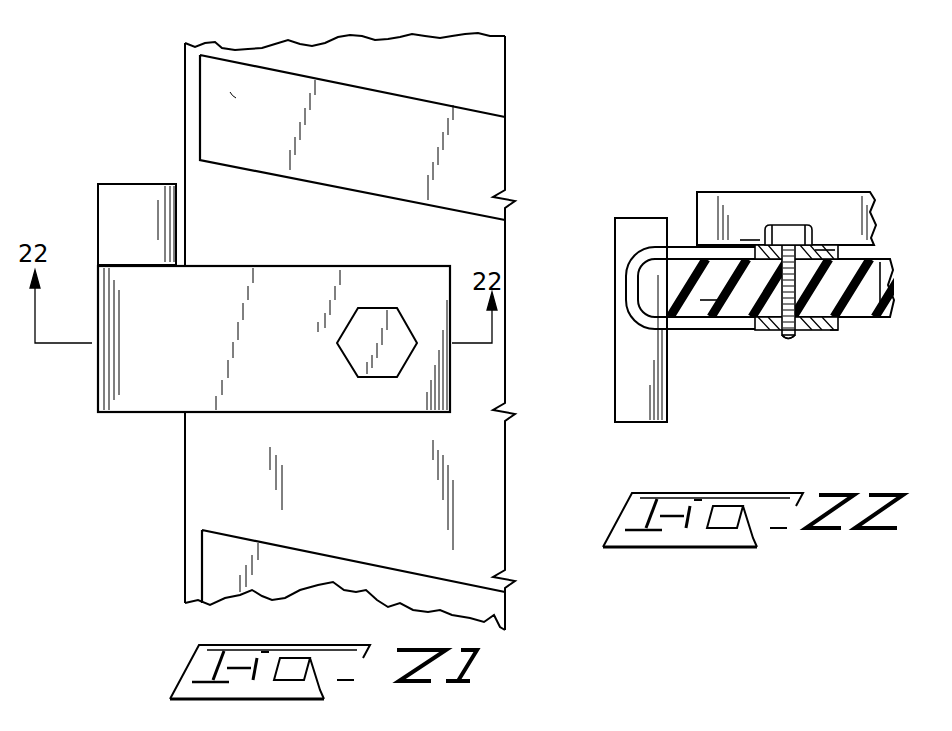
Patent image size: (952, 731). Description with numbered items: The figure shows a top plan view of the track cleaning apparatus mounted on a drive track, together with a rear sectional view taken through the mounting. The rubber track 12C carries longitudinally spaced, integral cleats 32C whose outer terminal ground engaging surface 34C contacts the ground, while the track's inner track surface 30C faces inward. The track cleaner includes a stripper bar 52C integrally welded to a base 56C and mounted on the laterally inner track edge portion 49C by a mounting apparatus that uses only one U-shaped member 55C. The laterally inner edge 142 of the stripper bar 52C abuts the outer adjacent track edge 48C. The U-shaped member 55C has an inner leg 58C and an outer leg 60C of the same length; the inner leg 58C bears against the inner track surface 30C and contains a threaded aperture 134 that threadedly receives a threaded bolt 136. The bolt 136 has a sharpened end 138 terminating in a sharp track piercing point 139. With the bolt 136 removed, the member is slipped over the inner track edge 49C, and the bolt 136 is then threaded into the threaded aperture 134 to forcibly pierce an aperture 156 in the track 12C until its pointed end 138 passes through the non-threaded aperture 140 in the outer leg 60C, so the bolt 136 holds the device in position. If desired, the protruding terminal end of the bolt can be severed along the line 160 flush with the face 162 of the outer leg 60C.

In FIG. 21, the track 12C is at (448, 52).
In FIG. 22, the track 12C is at (888, 273).
In FIG. 22, the inner track surface 30C is at (857, 257).
In FIG. 21, the cleats 32C is at (472, 105).
In FIG. 22, the cleats 32C is at (745, 238).
In FIG. 21, the ground engaging surface 34C is at (236, 92).
In FIG. 22, the ground engaging surface 34C is at (823, 250).
In FIG. 22, the outer adjacent track edge 48C is at (695, 292).
In FIG. 22, the laterally inner track edge portion 49C is at (660, 298).
In FIG. 21, the stripper bar 52C is at (120, 200).
In FIG. 22, the U-shaped member 55C is at (771, 401).
In FIG. 22, the base 56C is at (642, 283).
In FIG. 21, the inner leg 58C is at (222, 283).
In FIG. 22, the inner leg 58C is at (818, 238).
In FIG. 22, the outer leg 60C is at (840, 330).
In FIG. 22, the threaded aperture 134 is at (692, 232).
In FIG. 21, the threaded bolt 136 is at (397, 323).
In FIG. 22, the threaded bolt 136 is at (722, 243).
In FIG. 22, the sharpened end 138 is at (784, 342).
In FIG. 22, the track piercing point 139 is at (789, 340).
In FIG. 22, the non-threaded aperture 140 is at (830, 333).
In FIG. 22, the laterally inner edge 142 is at (674, 228).
In FIG. 22, the aperture 156 is at (690, 322).
In FIG. 22, the line 160 is at (780, 335).
In FIG. 22, the face 162 is at (688, 332).